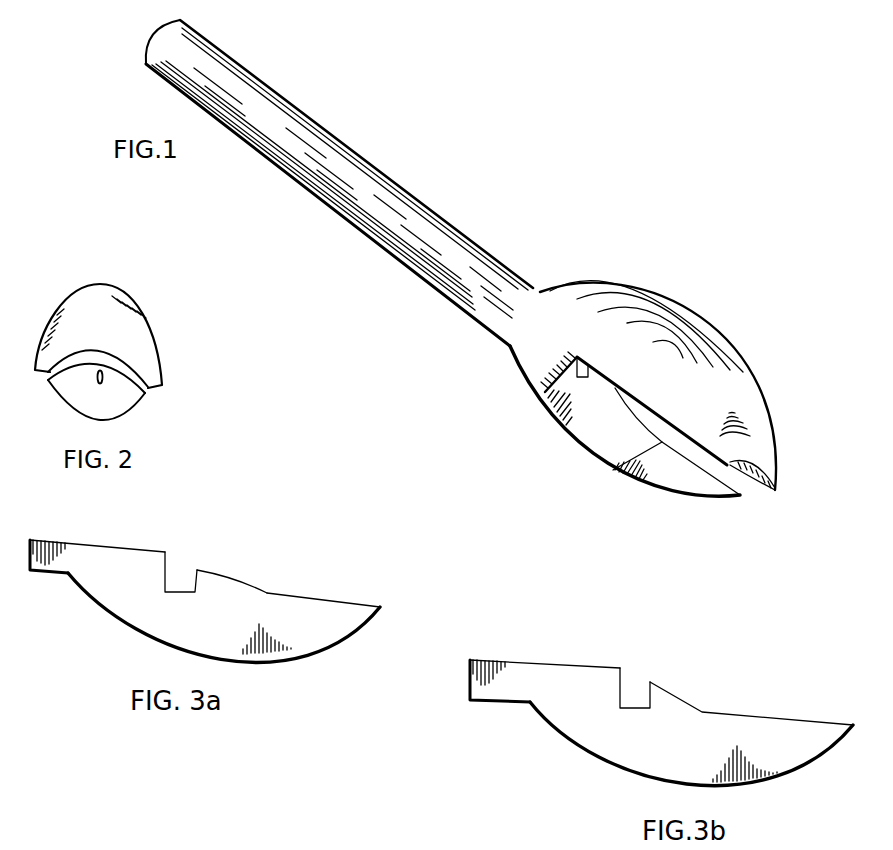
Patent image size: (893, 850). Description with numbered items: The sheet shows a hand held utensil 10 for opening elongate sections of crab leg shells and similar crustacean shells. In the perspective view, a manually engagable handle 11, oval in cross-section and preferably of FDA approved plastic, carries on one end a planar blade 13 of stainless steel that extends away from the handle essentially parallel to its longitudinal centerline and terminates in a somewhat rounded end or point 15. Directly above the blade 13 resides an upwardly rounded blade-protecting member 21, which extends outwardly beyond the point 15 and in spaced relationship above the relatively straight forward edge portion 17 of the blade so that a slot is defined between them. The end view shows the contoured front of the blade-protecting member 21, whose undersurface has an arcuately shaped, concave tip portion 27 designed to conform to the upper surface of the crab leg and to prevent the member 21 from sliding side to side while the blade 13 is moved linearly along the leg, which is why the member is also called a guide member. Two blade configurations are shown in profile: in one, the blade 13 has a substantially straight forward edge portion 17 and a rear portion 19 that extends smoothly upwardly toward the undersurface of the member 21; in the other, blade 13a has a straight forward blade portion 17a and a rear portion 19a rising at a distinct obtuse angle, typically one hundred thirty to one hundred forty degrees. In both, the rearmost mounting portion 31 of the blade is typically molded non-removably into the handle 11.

In FIG. 1, the hand held utensil 10 is at (335, 127).
In FIG. 1, the handle 11 is at (390, 220).
In FIG. 1, the planar blade 13 is at (583, 420).
In FIG. 2, the planar blade 13 is at (103, 383).
In FIG. 3A, the planar blade 13 is at (310, 633).
In FIG. 3B, the planar blade 13a is at (793, 753).
In FIG. 1, the end or point 15 is at (740, 496).
In FIG. 3A, the end or point 15 is at (380, 605).
In FIG. 1, the forward edge portion 17 is at (613, 470).
In FIG. 3A, the forward edge portion 17 is at (268, 593).
In FIG. 3B, the forward blade portion 17a is at (777, 715).
In FIG. 3A, the rear portion 19 is at (200, 570).
In FIG. 3B, the rear portion 19a is at (660, 698).
In FIG. 1, the blade-protecting member 21 is at (658, 372).
In FIG. 2, the blade-protecting member 21 is at (117, 327).
In FIG. 1, the arcuately shaped tip portion 27 is at (753, 481).
In FIG. 2, the arcuately shaped tip portion 27 is at (127, 358).
In FIG. 3A, the mounting portion 31 is at (68, 562).
In FIG. 3B, the mounting portion 31 is at (520, 673).